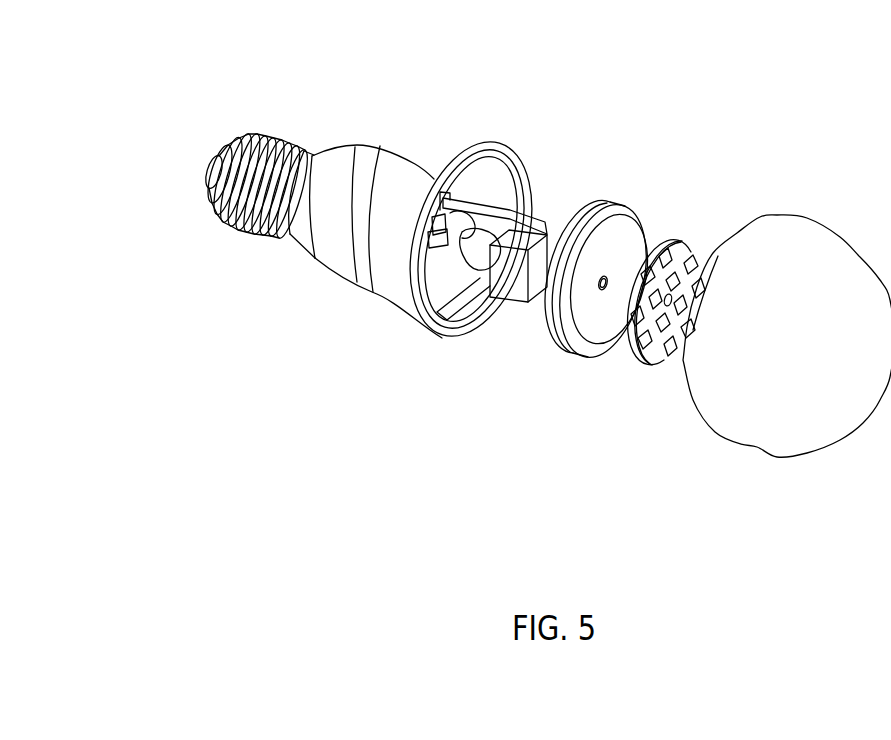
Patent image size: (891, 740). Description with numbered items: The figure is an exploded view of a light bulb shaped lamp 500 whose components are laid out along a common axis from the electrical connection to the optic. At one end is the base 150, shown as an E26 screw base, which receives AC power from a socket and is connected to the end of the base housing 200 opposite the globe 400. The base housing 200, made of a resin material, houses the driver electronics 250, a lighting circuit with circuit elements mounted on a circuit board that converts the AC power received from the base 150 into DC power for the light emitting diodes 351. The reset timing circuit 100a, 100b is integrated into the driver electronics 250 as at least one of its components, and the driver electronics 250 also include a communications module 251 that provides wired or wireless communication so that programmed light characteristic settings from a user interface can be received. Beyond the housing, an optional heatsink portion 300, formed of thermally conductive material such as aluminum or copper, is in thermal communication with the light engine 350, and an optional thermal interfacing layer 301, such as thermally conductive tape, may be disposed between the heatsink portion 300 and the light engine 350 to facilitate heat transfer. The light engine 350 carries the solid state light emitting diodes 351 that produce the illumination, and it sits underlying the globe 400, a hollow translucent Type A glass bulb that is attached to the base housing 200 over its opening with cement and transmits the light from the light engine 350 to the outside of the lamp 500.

The lamp 500 is at (693, 148).
The base 150 is at (207, 182).
The base housing 200 is at (388, 250).
The driver electronics 250 is at (437, 237).
The communications module 251 is at (462, 198).
The reset timing circuit 100a is at (512, 242).
The reset timing circuit 100b is at (518, 266).
The heatsink portion 300 is at (555, 350).
The thermal interfacing layer 301 is at (617, 323).
The light engine 350 is at (700, 293).
The light emitting diodes 351 is at (690, 243).
The globe 400 is at (745, 446).